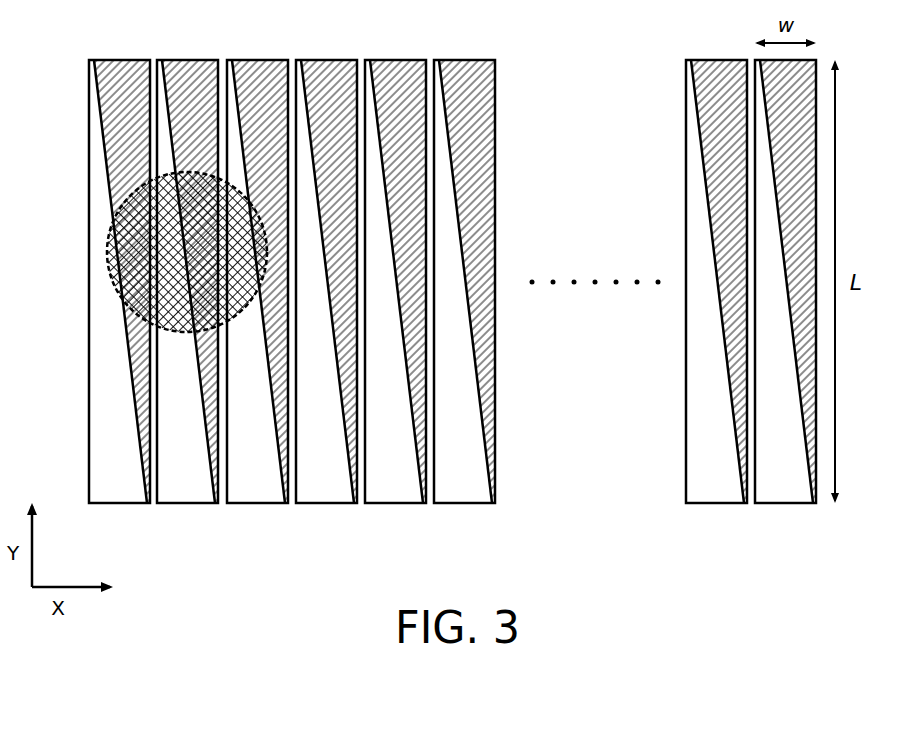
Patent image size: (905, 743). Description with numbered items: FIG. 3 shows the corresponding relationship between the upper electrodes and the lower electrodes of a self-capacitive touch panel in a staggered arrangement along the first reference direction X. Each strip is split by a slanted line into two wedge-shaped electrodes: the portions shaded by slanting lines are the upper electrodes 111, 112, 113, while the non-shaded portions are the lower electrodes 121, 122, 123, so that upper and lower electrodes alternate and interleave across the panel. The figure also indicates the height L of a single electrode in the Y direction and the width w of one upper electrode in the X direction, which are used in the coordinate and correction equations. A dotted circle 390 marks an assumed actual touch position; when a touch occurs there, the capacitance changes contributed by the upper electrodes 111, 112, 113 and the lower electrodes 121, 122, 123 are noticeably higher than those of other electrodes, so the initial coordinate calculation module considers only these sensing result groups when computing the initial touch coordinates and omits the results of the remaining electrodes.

The upper electrode 111 is at (122, 60).
The upper electrode 112 is at (199, 60).
The upper electrode 113 is at (276, 60).
The lower electrode 121 is at (117, 503).
The lower electrode 122 is at (187, 503).
The lower electrode 123 is at (262, 503).
The dotted circle 390 is at (106, 250).